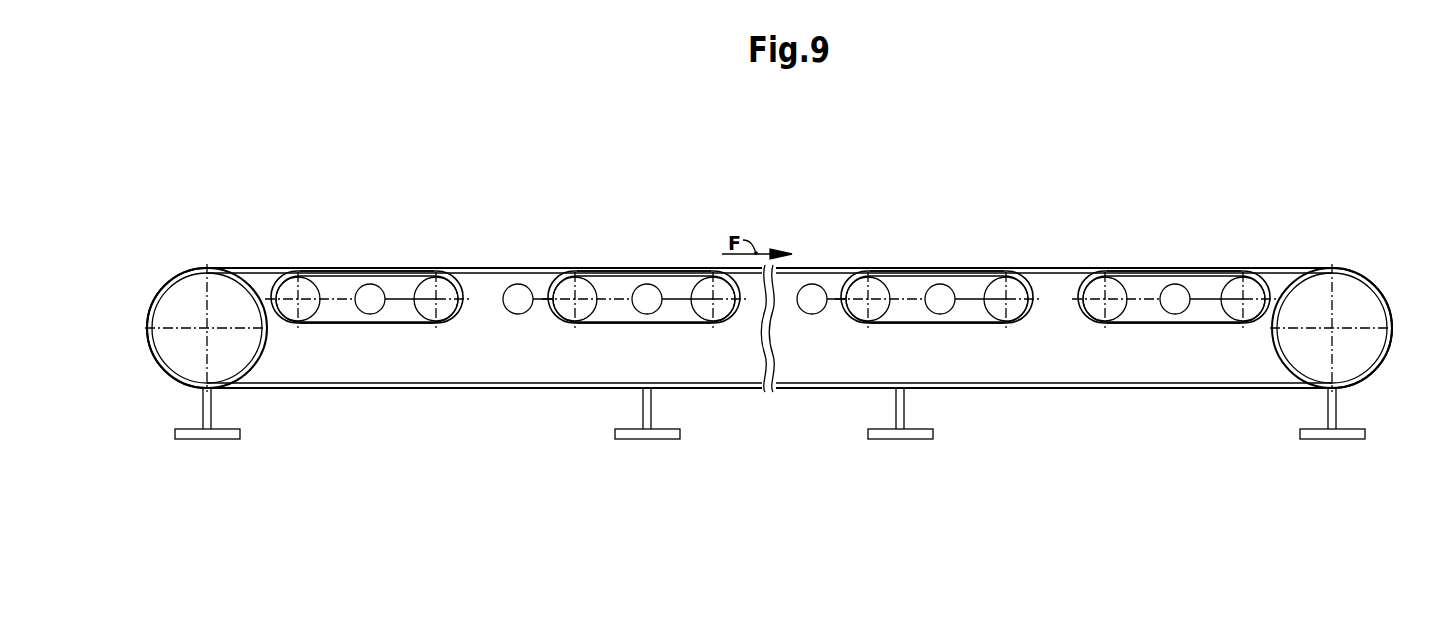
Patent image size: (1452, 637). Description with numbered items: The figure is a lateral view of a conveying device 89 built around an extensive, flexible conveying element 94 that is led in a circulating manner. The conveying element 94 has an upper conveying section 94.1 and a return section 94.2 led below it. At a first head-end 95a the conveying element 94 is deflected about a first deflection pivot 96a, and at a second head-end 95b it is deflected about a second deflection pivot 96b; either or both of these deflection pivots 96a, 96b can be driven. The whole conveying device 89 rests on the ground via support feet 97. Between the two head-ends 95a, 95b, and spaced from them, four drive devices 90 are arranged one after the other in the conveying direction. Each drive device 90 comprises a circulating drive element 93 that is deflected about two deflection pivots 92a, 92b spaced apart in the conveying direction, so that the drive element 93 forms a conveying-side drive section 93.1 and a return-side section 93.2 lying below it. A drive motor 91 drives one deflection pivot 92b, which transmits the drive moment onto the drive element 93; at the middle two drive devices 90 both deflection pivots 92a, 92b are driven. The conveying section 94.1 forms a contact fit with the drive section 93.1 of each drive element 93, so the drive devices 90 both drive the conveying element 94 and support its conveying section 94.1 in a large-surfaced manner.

The conveying device 89 is at (1290, 238).
The drive device 90 is at (412, 338).
The drive motor 91 is at (370, 284).
The deflection pivot 92a is at (297, 297).
The deflection pivot 92b is at (436, 298).
The drive element 93 is at (357, 323).
The drive section 93.1 is at (333, 272).
The return-side section 93.2 is at (317, 323).
The conveying element 94 is at (485, 387).
The conveying section 94.1 is at (1035, 269).
The return section 94.2 is at (1064, 387).
The first head-end 95a is at (179, 268).
The second head-end 95b is at (1359, 270).
The first deflection pivot 96a is at (203, 318).
The second deflection pivot 96b is at (1334, 318).
The support feet 97 is at (190, 433).